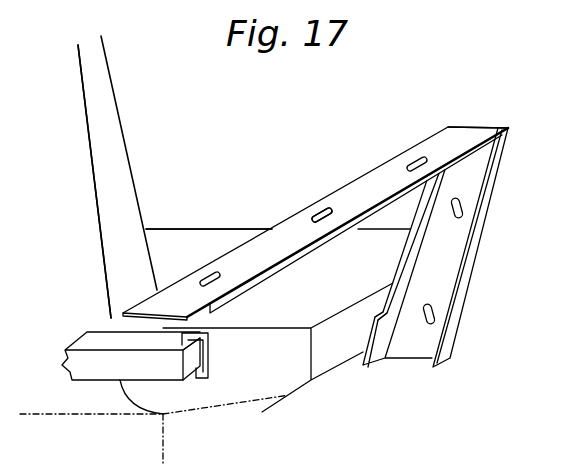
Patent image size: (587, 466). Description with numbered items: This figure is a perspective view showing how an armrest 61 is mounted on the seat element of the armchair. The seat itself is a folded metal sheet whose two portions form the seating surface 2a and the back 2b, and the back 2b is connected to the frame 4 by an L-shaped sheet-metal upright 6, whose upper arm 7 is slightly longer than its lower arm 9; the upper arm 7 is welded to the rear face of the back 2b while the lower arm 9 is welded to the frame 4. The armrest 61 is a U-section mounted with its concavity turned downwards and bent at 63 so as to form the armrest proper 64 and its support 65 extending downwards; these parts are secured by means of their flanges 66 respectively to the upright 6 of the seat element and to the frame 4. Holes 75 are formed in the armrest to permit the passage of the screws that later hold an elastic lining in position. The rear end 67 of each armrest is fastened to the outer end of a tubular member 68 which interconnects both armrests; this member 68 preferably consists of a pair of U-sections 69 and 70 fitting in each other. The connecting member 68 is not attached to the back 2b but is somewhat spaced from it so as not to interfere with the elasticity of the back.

The seating surface 2a is at (198, 240).
The back 2b is at (54, 189).
The frame 4 is at (340, 360).
The L-shaped metal upright 6 is at (100, 236).
The upper arm 7 is at (107, 90).
The lower arm 9 is at (292, 366).
The armrest 61 is at (433, 128).
The bend 63 is at (486, 128).
The armrest proper 64 is at (282, 230).
The support 65 is at (474, 184).
The flanges 66 is at (400, 303).
The rear end 67 is at (155, 305).
The tubular member 68 is at (63, 352).
The U-section 69 is at (178, 337).
The U-section 70 is at (194, 362).
The holes 75 is at (320, 213).